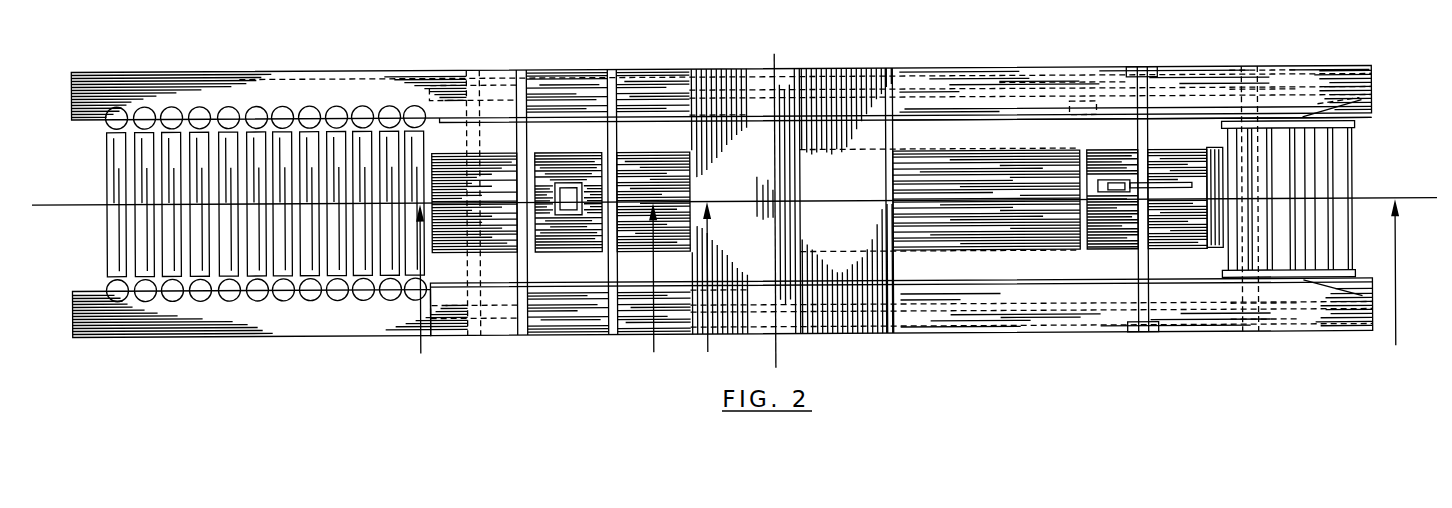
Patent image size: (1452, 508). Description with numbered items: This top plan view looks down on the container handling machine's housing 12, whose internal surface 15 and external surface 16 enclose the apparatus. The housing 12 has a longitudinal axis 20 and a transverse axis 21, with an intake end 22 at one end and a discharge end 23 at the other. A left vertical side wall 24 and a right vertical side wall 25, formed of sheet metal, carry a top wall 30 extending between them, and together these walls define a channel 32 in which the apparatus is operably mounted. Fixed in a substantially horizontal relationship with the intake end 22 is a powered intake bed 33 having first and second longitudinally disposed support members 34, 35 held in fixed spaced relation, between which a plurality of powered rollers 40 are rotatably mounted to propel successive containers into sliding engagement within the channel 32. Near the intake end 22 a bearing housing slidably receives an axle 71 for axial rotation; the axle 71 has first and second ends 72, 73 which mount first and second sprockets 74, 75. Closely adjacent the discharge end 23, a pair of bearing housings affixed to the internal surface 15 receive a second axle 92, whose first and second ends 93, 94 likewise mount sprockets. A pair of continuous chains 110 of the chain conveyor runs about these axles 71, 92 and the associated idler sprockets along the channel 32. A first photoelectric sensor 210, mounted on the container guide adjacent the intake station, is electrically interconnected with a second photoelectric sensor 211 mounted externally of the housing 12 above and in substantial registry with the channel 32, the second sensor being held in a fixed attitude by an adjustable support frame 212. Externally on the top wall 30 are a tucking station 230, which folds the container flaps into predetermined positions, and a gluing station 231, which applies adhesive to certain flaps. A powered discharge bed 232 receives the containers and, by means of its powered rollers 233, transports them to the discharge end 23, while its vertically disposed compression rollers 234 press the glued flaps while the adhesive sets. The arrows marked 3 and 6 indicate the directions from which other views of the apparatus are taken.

The section line 3- 3 is at (1053, 289).
The section line 6- 6 is at (537, 292).
The housing 12 is at (855, 70).
The internal surface 15 is at (370, 85).
The external surface 16 is at (1050, 85).
The longitudinal axis 20 is at (47, 202).
The transverse axis 21 is at (777, 62).
The intake end 22 is at (1322, 198).
The discharge end 23 is at (223, 218).
The left vertical side wall 24 is at (590, 334).
The right vertical side wall 25 is at (560, 69).
The top wall 30 is at (1078, 86).
The channel 32 is at (993, 136).
The powered intake bed 33 is at (1304, 230).
The first longitudinally disposed support member 34 is at (1356, 131).
The second longitudinally disposed support member 35 is at (1357, 276).
The powered rollers 40 is at (1277, 141).
The axle 71 is at (1280, 101).
The first end of axle 72 is at (1247, 298).
The second end of axle 73 is at (1276, 73).
The first sprocket 74 is at (1275, 316).
The second sprocket 75 is at (1316, 66).
The axle 92 is at (468, 142).
The first end of axle 93 is at (468, 335).
The second end of axle 94 is at (463, 70).
The continuous chains 110 is at (937, 91).
The first photoelectric sensor 210 is at (1083, 118).
The second photoelectric sensor 211 is at (1098, 187).
The adjustable support frame 212 is at (1148, 104).
The tucking station 230 is at (832, 184).
The gluing station 231 is at (575, 167).
The powered discharge bed 232 is at (118, 228).
The powered rollers 233 is at (200, 154).
The compression rollers 234 is at (312, 104).